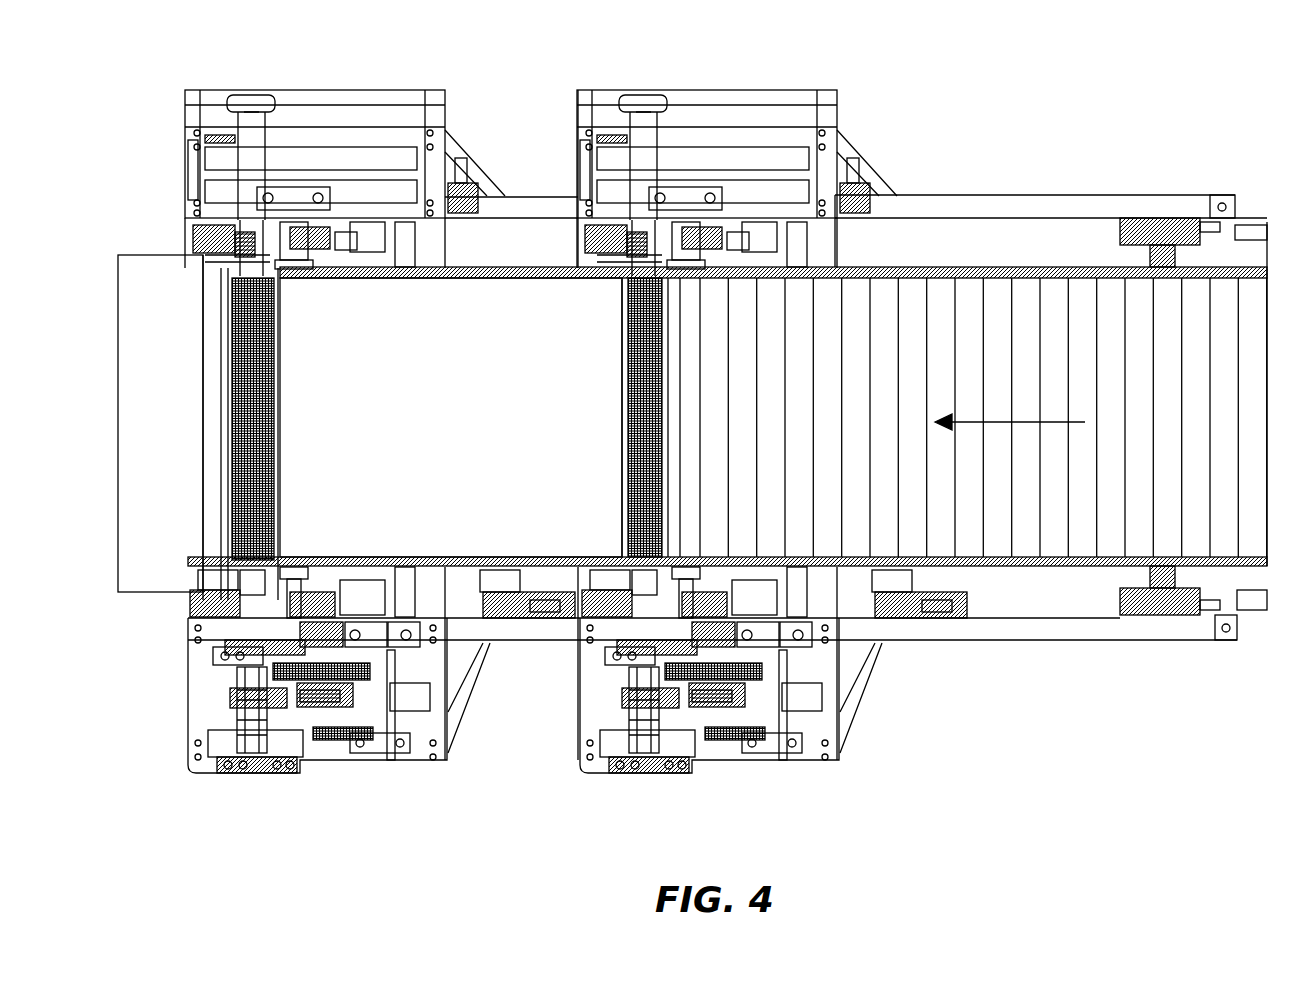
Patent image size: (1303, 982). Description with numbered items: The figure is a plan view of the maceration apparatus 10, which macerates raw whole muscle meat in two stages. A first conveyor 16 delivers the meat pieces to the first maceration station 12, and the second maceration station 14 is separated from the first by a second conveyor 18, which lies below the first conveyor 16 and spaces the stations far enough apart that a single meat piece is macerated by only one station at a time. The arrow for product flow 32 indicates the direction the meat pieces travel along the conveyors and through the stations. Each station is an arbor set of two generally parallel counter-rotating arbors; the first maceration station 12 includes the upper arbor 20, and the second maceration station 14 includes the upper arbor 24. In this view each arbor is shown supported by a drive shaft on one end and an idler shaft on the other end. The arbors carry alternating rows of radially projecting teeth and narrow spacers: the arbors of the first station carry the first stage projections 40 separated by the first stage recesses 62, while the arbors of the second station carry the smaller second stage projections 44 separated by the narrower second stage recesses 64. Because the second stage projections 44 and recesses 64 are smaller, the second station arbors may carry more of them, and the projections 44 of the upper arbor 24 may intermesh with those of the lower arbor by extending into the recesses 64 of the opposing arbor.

The maceration apparatus 10 is at (185, 70).
The first maceration station 12 is at (672, 300).
The second maceration station 14 is at (232, 298).
The first conveyor 16 is at (968, 297).
The second conveyor 18 is at (460, 300).
The upper arbor 20 is at (668, 493).
The upper arbor 24 is at (230, 492).
The product flow 32 is at (1022, 422).
The first stage projections 40 is at (668, 425).
The second stage projections 44 is at (238, 425).
The first stage recesses 62 is at (668, 360).
The second stage recesses 64 is at (232, 350).